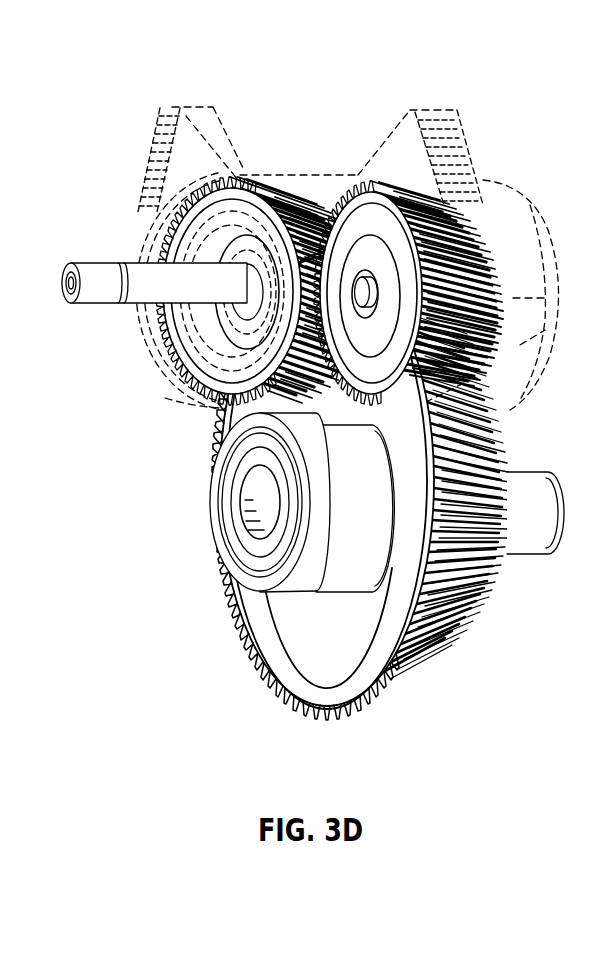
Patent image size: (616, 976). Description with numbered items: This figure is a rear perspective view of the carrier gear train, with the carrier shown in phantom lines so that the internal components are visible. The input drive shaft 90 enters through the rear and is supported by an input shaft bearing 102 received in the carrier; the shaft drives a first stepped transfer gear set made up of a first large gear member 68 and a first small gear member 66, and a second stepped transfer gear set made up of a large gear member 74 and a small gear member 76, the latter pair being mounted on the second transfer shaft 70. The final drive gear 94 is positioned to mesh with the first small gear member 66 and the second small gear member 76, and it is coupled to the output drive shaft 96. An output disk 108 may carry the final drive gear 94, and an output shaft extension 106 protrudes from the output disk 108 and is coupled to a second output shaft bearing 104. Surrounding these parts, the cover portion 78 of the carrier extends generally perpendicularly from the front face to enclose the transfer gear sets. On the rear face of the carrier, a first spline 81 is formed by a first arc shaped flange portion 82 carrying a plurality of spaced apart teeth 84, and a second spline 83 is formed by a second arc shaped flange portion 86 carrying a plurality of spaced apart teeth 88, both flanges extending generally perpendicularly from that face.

The first small gear member 66 is at (303, 253).
The first large gear member 68 is at (267, 197).
The second transfer shaft 70 is at (378, 297).
The large gear member 74 is at (443, 375).
The second small gear member 76 is at (500, 322).
The cover portion 78 is at (520, 195).
The first spline 81 is at (434, 85).
The first arc shaped flange portion 82 is at (447, 108).
The first bearing support 83 is at (174, 84).
The spaced apart teeth 84 is at (470, 167).
The second arc shaped flange portion 86 is at (198, 105).
The spaced apart teeth 88 is at (157, 135).
The input drive shaft 90 is at (140, 272).
The final drive gear 94 is at (470, 645).
The output drive shaft 96 is at (545, 490).
The input shaft bearing 102 is at (227, 323).
The second output shaft bearing 104 is at (227, 482).
The output shaft extension 106 is at (258, 540).
The output disk 108 is at (384, 612).